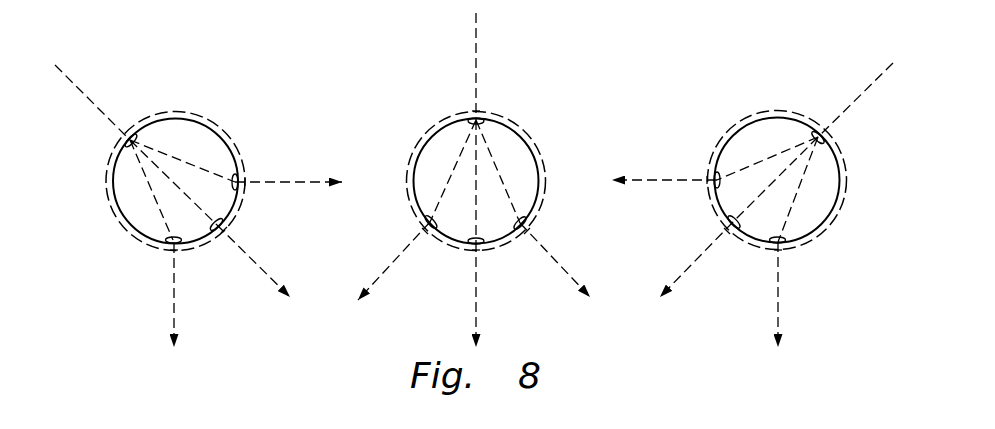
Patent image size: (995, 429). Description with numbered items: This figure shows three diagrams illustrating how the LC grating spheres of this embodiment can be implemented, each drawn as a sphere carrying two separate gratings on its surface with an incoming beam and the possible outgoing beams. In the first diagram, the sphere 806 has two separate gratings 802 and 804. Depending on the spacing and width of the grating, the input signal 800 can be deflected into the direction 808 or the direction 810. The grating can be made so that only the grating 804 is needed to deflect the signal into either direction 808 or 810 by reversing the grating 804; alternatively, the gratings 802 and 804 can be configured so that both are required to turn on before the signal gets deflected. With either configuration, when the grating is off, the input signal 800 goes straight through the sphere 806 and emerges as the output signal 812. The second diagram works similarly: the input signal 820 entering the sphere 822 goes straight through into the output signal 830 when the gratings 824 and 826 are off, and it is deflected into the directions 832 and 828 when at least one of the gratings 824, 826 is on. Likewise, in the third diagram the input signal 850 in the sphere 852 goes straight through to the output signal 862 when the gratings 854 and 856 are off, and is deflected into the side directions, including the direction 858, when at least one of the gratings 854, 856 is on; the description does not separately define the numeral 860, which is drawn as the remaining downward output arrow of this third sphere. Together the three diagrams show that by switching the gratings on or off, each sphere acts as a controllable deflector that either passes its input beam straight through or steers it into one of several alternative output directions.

The input signal 800 is at (84, 92).
The grating 802 is at (192, 112).
The grating 804 is at (193, 253).
The sphere 806 is at (107, 183).
The direction 808 is at (173, 285).
The direction 810 is at (276, 180).
The output signal 812 is at (253, 262).
The input signal 820 is at (477, 50).
The sphere 822 is at (412, 163).
The grating 824 is at (455, 110).
The grating 826 is at (495, 250).
The direction 828 is at (563, 267).
The output signal 830 is at (474, 287).
The direction 832 is at (388, 267).
The input signal 850 is at (863, 92).
The sphere 852 is at (843, 183).
The grating 854 is at (762, 108).
The grating 856 is at (757, 250).
The direction 858 is at (672, 177).
The downward output beam 860 is at (778, 284).
The output signal 862 is at (702, 254).